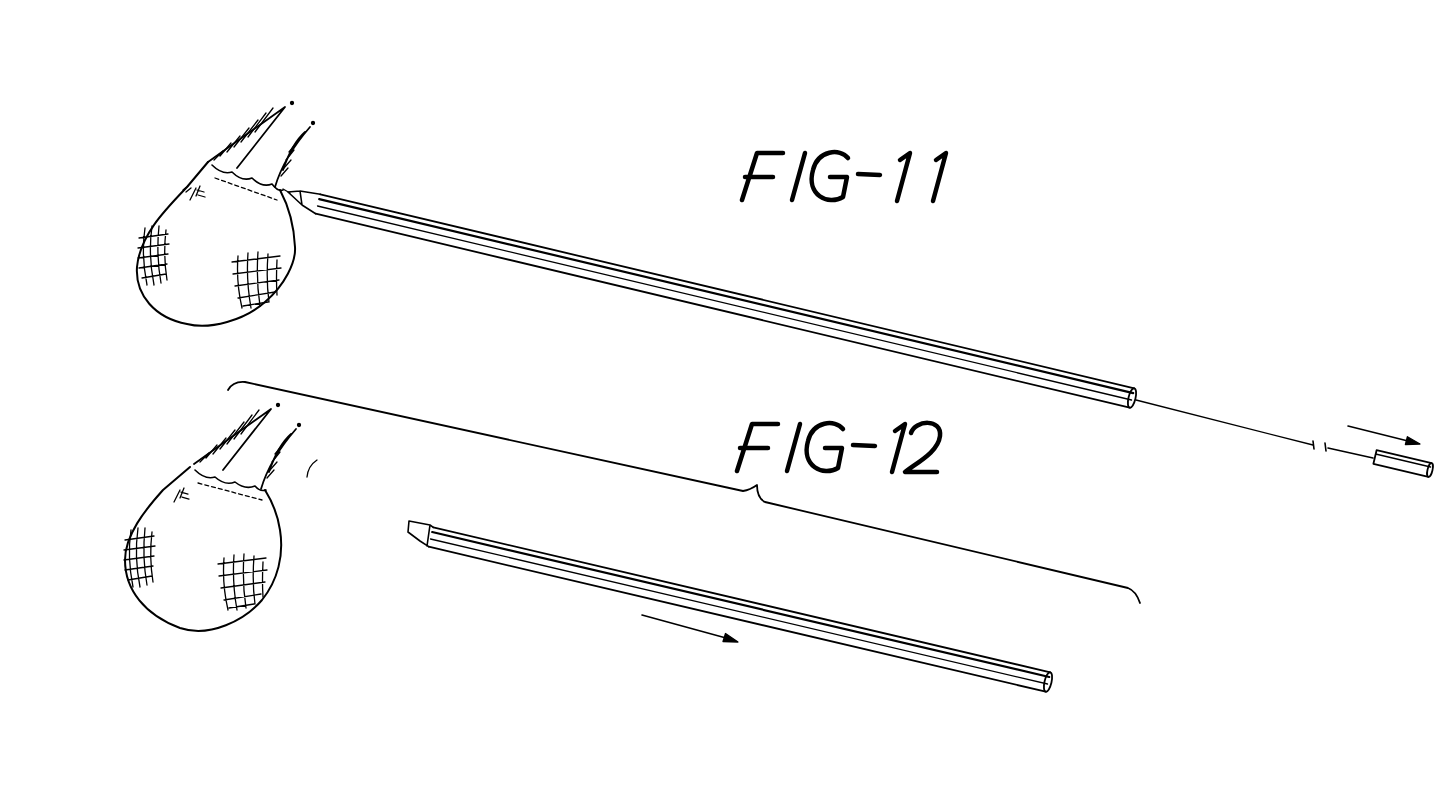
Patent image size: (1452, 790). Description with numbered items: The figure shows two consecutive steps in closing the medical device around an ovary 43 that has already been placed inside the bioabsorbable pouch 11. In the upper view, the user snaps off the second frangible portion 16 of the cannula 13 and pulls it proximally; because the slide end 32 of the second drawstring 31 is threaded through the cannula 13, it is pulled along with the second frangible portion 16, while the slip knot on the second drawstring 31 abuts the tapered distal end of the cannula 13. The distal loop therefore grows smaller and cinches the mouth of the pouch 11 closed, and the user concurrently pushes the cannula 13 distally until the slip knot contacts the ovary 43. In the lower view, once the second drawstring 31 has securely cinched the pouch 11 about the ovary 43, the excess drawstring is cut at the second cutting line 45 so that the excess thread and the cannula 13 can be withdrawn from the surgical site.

In FIG. 11, the pouch 11 is at (153, 298).
In FIG. 12, the pouch 11 is at (173, 623).
In FIG. 11, the cannula 13 is at (703, 293).
In FIG. 12, the cannula 13 is at (860, 645).
In FIG. 11, the second frangible portion 16 is at (1418, 474).
In FIG. 11, the second drawstring 31 is at (1207, 413).
In FIG. 11, the slide end 32 is at (1297, 443).
In FIG. 11, the ovary 43 is at (253, 143).
In FIG. 12, the ovary 43 is at (223, 450).
In FIG. 12, the second cutting line 45 is at (293, 490).